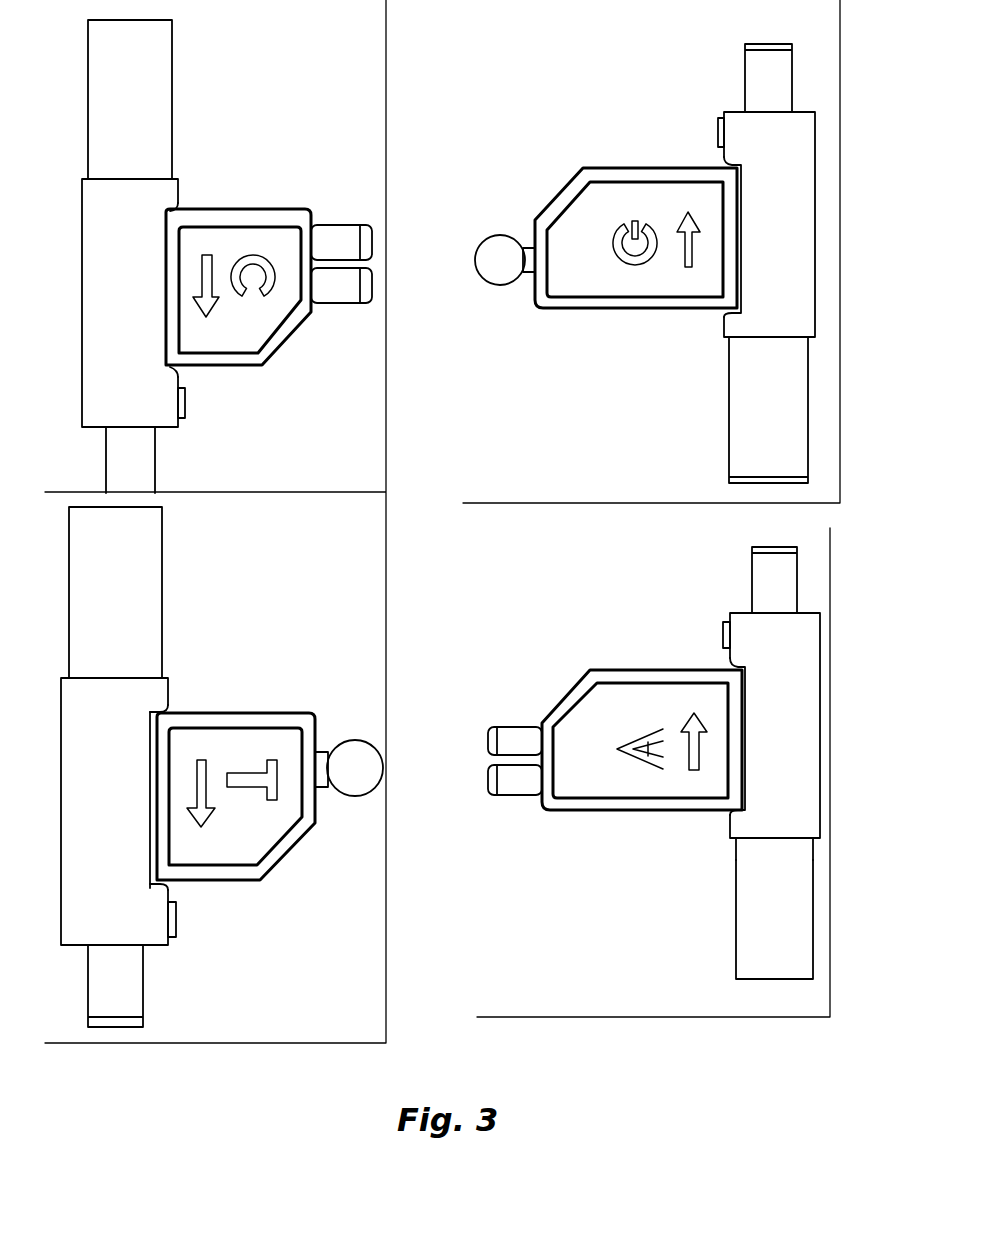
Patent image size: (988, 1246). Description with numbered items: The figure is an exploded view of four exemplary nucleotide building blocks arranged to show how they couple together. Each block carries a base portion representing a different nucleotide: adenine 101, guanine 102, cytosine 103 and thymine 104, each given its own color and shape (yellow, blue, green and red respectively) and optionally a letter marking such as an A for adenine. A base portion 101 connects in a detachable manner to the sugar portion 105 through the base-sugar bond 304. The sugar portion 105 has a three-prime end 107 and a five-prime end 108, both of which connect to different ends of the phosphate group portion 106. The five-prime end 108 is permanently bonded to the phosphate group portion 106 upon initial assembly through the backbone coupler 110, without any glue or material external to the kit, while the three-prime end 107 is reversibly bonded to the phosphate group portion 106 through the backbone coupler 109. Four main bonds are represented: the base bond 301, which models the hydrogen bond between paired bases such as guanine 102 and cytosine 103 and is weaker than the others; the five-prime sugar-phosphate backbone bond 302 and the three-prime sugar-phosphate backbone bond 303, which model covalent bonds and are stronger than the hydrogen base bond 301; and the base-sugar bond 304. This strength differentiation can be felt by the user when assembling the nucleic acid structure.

The adenine base portion 101 is at (594, 699).
The guanine base portion 102 is at (594, 281).
The cytosine base portion 103 is at (265, 328).
The thymine base portion 104 is at (247, 839).
The sugar portion 105 is at (776, 737).
The phosphate group portion 106 is at (786, 925).
The 3' end of the sugar portion 107 is at (778, 594).
The 5' end of the sugar portion 108 is at (770, 823).
The backbone coupler 109 is at (770, 963).
The backbone coupler 110 is at (770, 855).
The base bond 301 is at (428, 250).
The 5' sugar-phosphate backbone bond 302 is at (118, 674).
The 3' sugar-phosphate backbone bond 303 is at (127, 497).
The base-sugar bond 304 is at (741, 240).